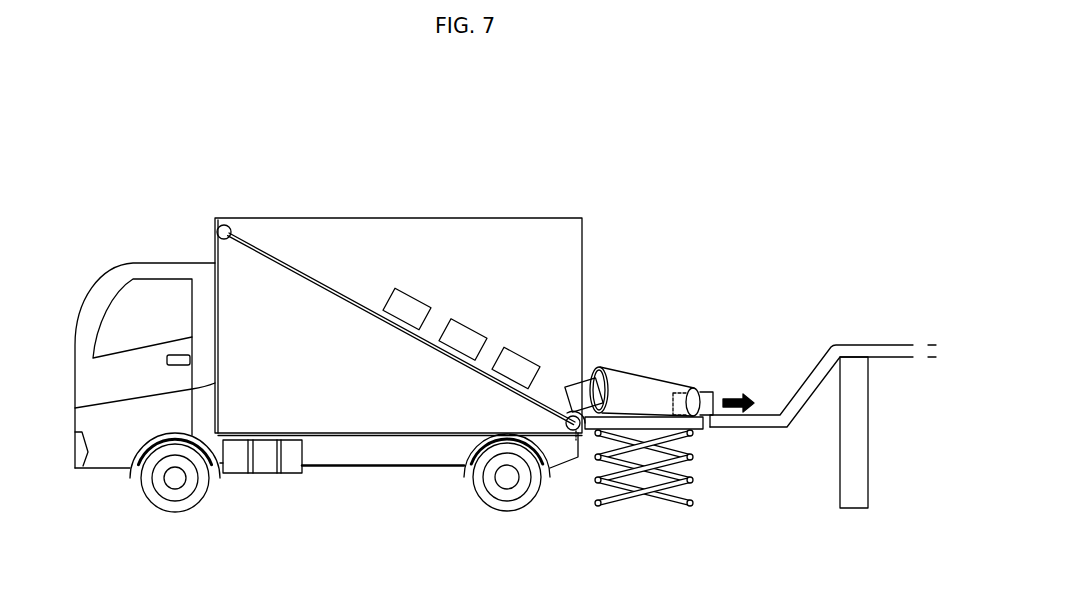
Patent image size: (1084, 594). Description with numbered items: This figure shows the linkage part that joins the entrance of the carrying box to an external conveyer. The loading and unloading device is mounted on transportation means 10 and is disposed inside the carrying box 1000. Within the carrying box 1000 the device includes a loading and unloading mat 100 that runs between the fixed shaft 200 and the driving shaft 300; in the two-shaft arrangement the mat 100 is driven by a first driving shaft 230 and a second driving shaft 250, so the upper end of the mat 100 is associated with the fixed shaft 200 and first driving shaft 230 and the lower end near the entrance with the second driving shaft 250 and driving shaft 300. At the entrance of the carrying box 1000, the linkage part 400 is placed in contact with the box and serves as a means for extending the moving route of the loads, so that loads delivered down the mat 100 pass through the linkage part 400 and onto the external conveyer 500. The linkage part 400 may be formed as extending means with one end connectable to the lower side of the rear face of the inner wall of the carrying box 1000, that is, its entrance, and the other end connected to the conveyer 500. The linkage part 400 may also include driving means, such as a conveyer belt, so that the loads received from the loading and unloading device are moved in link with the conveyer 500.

The transportation means 10 is at (104, 298).
The loading and unloading mat 100 is at (313, 275).
The fixed shaft 200 is at (231, 229).
The first driving shaft 230 is at (257, 188).
The second driving shaft 250 is at (577, 440).
The driving shaft 300 is at (554, 491).
The linkage part 400 is at (627, 381).
The external conveyer 500 is at (897, 345).
The carrying box 1000 is at (497, 218).